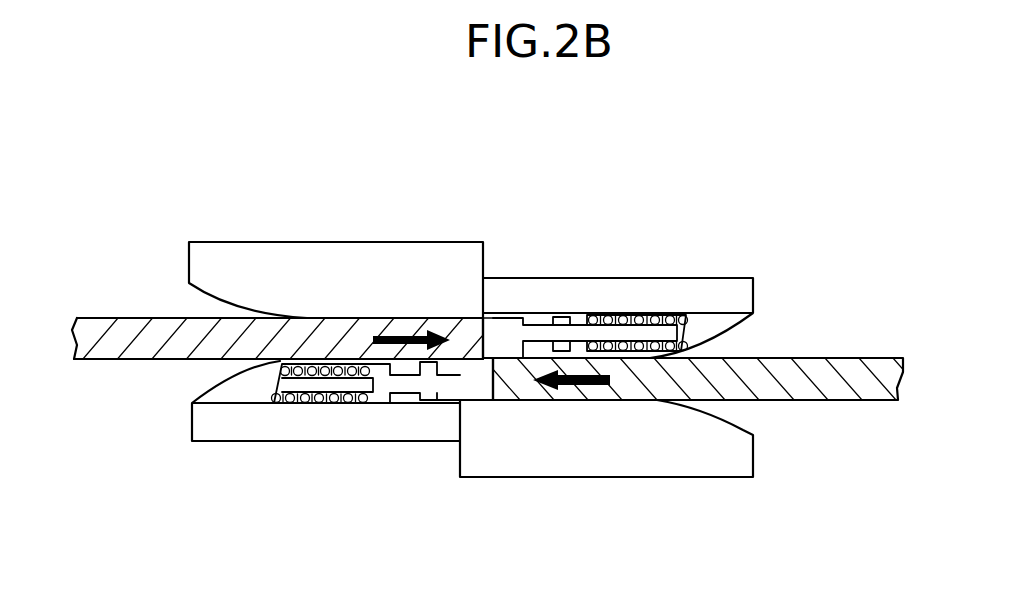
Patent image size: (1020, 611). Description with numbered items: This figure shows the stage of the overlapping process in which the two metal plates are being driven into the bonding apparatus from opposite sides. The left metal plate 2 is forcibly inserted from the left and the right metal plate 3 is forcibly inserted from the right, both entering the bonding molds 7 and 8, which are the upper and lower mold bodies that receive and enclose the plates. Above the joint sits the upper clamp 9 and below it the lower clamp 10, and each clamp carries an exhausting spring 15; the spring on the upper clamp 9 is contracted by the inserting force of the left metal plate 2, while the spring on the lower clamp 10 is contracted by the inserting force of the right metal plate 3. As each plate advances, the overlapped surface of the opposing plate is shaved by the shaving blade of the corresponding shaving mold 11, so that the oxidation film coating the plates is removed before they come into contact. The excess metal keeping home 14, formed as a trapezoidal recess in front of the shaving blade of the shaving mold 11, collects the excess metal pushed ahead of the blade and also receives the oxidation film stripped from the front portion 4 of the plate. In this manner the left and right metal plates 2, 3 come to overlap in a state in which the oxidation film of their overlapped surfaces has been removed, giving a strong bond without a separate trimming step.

The left metal plate 2 is at (123, 338).
The right metal plate 3 is at (792, 378).
The front portion 4 is at (484, 355).
The bonding mold 7 is at (418, 272).
The bonding mold 8 is at (615, 453).
The upper clamp 9 is at (599, 298).
The lower clamp 10 is at (283, 427).
The shaving mold 11 is at (505, 333).
The excess metal keeping home 14 is at (489, 352).
The exhausting spring 15 is at (665, 312).